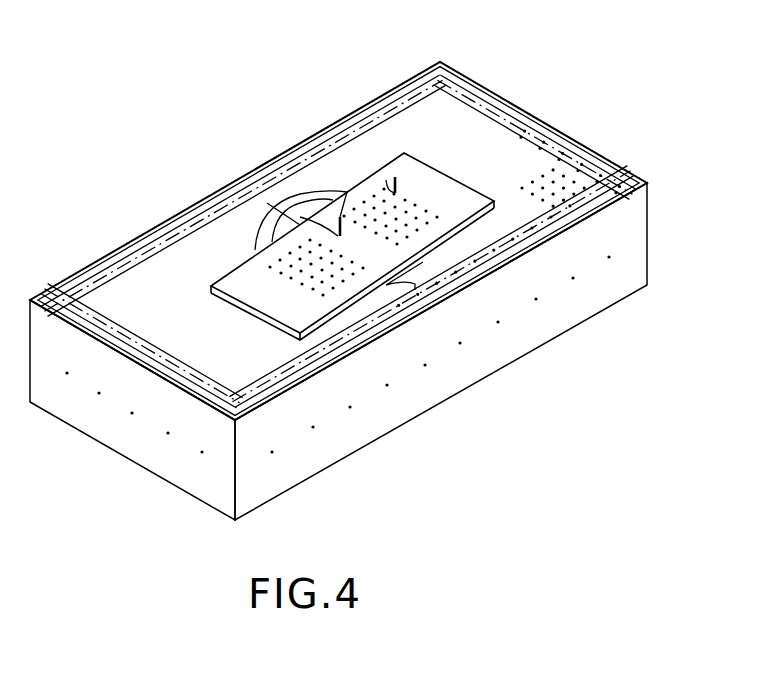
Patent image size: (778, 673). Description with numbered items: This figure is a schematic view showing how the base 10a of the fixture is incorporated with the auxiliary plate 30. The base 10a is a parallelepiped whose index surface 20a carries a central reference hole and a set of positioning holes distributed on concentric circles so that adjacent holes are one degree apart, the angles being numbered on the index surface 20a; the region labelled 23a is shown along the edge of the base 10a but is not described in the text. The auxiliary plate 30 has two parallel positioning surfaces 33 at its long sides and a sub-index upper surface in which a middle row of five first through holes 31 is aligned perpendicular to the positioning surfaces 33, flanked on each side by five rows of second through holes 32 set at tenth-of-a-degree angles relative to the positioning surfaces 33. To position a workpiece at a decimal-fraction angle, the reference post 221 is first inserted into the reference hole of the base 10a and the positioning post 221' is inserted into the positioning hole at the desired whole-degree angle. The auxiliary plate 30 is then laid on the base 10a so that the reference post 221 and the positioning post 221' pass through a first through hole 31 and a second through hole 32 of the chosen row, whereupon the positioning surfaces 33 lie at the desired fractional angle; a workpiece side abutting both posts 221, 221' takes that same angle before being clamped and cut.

The base 10a is at (487, 63).
The index surface 20a is at (513, 110).
The groove 23a is at (587, 160).
The auxiliary plate 30 is at (210, 285).
The first through holes 31 is at (232, 283).
The second through holes 32 is at (392, 190).
The positioning surfaces 33 is at (210, 293).
The reference post 221 is at (301, 179).
The positioning post 221' is at (389, 120).